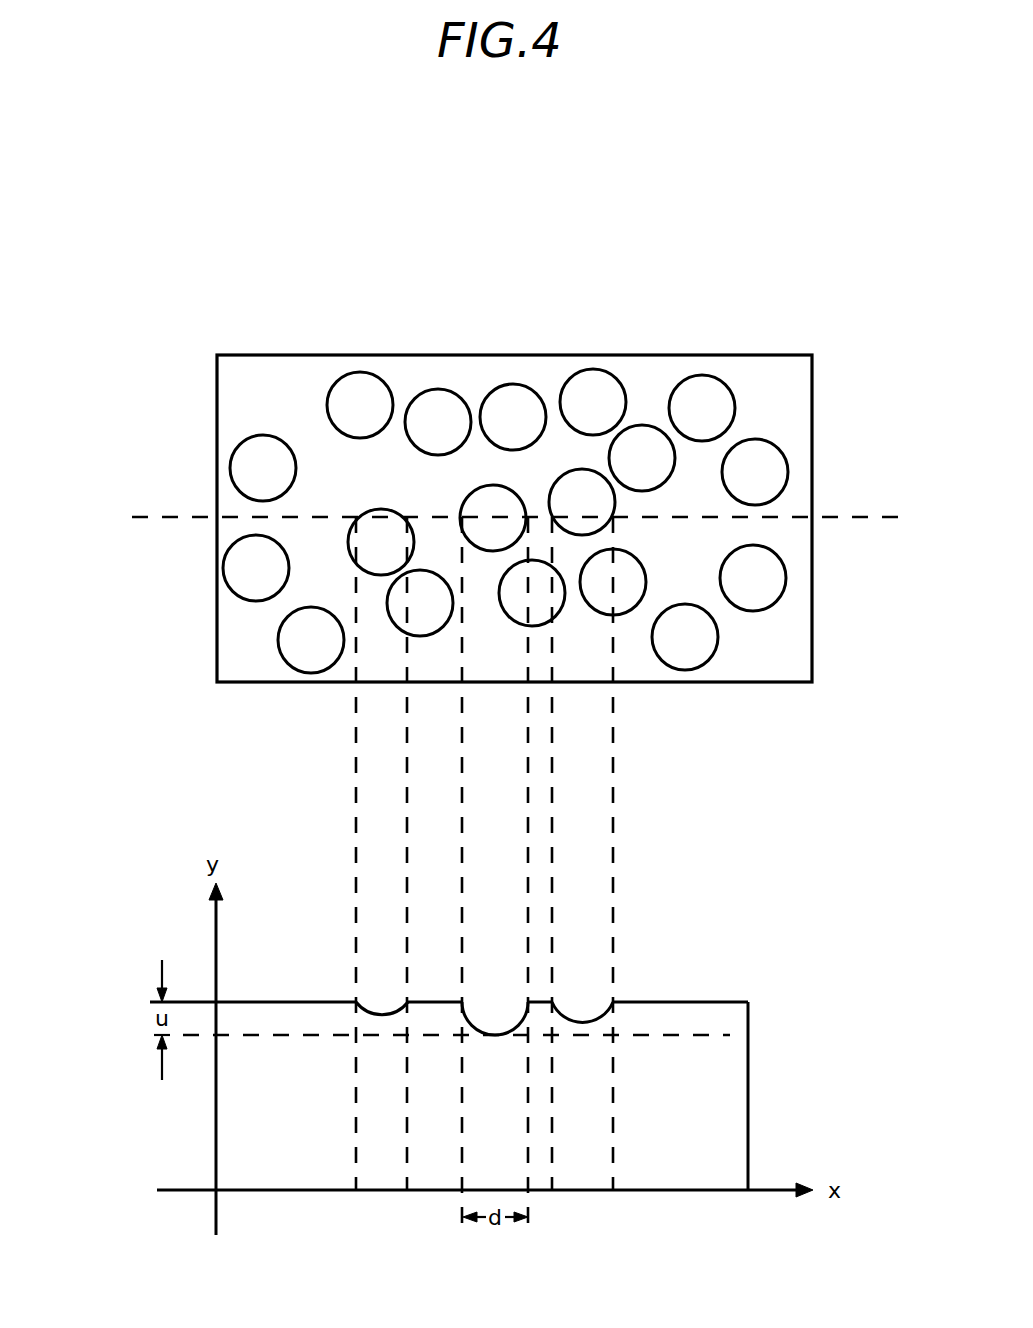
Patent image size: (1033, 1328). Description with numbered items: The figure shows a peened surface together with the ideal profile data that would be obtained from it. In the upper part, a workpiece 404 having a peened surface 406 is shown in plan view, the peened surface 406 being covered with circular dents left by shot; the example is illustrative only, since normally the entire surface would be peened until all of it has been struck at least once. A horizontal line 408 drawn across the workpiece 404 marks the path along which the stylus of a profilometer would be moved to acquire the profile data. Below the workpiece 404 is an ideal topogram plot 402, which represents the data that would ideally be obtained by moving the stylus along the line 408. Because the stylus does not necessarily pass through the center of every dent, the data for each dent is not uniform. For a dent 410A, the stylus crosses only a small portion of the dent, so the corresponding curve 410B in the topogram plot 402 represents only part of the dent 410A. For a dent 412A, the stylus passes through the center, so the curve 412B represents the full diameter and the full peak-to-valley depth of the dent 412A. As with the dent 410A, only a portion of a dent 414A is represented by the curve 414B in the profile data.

The topogram plot 402 is at (192, 1142).
The workpiece 404 is at (203, 660).
The peened surface 406 is at (442, 392).
The line 408 is at (860, 517).
The dent 410A is at (347, 535).
The dent 412A is at (467, 495).
The dent 414A is at (615, 497).
The curve 410B is at (370, 1015).
The curve 412B is at (483, 1038).
The curve 414B is at (583, 1025).